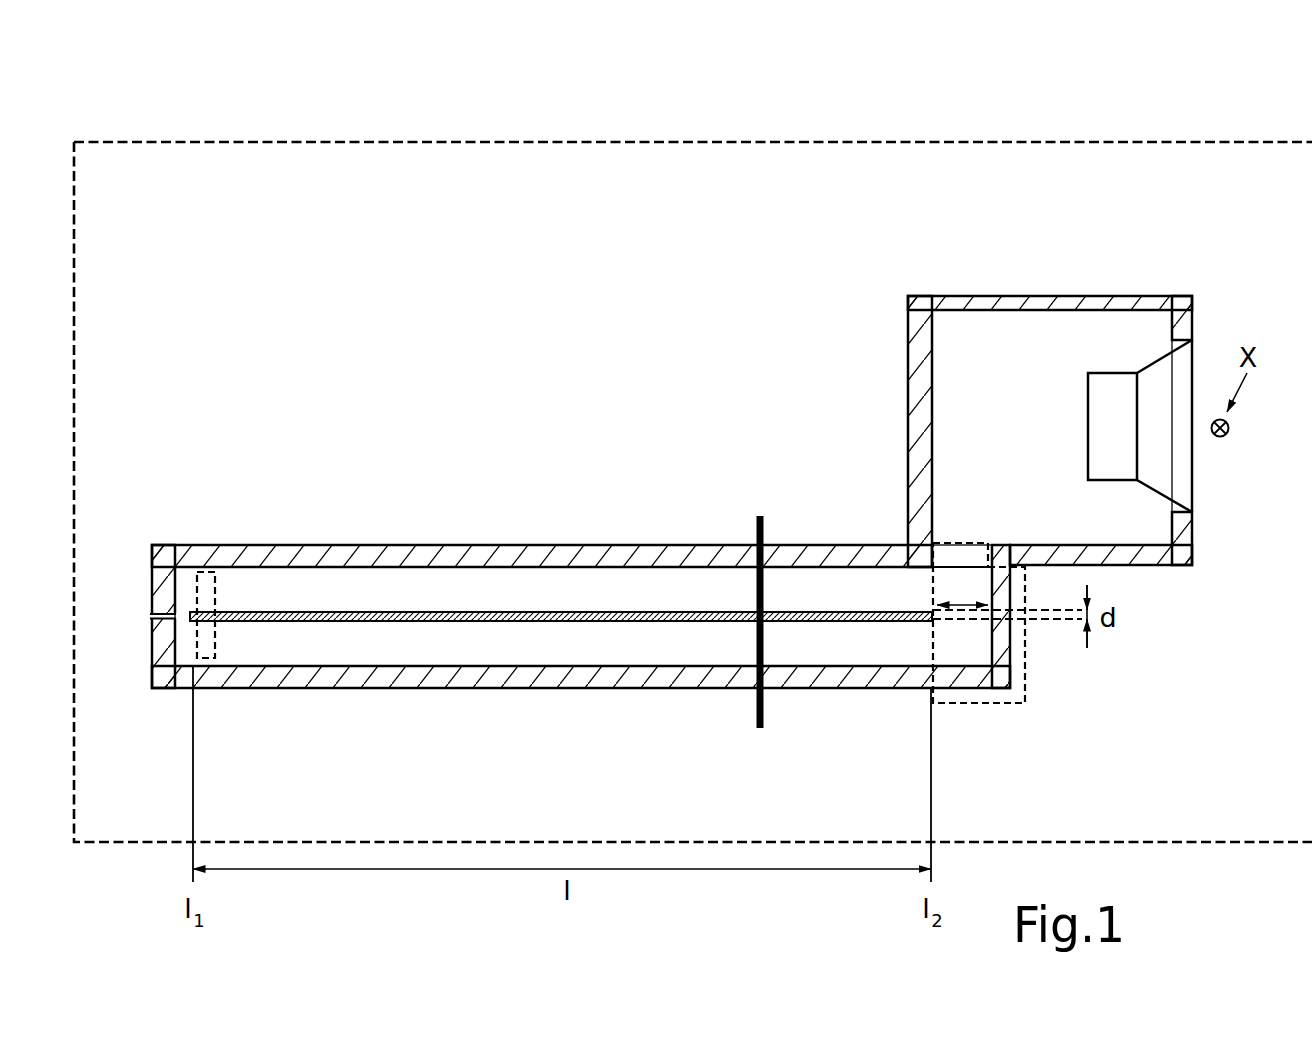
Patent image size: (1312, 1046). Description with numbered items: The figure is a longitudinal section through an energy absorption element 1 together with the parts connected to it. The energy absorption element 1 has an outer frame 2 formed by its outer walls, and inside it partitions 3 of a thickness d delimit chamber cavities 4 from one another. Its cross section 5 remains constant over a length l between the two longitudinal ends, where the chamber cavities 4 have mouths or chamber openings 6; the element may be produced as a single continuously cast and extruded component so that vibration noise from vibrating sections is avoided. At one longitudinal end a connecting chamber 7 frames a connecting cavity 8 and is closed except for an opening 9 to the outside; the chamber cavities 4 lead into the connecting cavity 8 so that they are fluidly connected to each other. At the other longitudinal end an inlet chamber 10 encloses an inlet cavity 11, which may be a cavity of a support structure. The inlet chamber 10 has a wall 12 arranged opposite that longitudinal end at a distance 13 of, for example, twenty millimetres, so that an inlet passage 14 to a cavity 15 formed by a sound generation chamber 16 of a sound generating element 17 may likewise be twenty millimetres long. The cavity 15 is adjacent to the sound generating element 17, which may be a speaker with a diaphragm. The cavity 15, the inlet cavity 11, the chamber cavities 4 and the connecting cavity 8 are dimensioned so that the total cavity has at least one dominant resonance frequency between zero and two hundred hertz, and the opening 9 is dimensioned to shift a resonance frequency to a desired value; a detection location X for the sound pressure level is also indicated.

The energy absorption element 1 is at (147, 140).
The outer frame 2 is at (573, 552).
The partitions 3 is at (343, 603).
The chamber cavities 4 is at (458, 587).
The cross section 5 is at (761, 508).
The chamber openings 6 is at (213, 585).
The connecting chamber 7 is at (162, 680).
The connecting cavity 8 is at (183, 587).
The opening 9 is at (152, 622).
The inlet chamber 10 is at (983, 707).
The inlet cavity 11 is at (976, 644).
The wall 12 is at (1012, 645).
The distance 13 is at (968, 593).
The inlet passage 14 is at (966, 542).
The cavity 15 is at (1018, 372).
The sound generation chamber 16 is at (963, 293).
The sound generating element 17 is at (1178, 464).